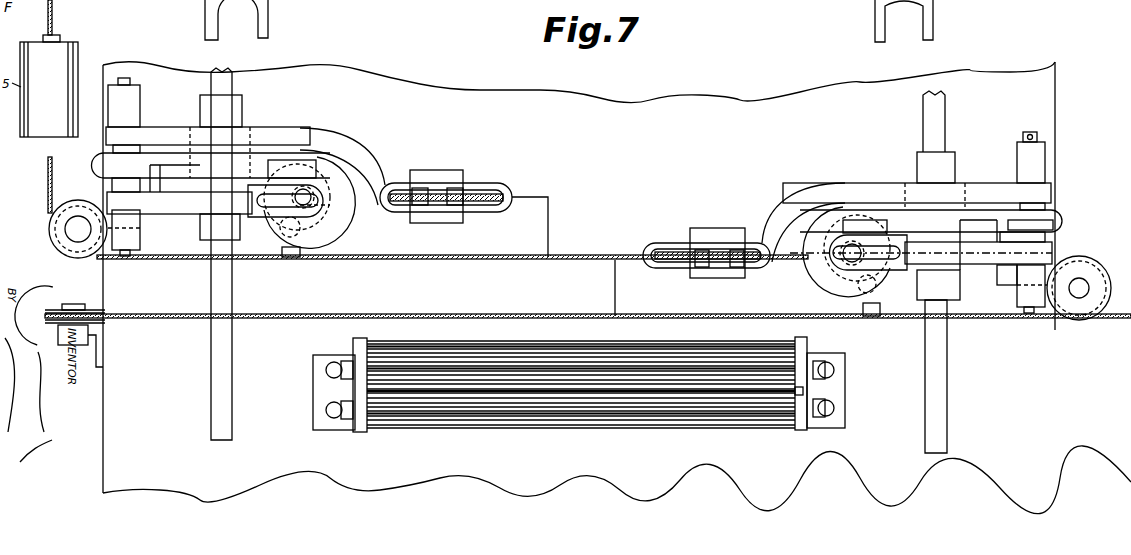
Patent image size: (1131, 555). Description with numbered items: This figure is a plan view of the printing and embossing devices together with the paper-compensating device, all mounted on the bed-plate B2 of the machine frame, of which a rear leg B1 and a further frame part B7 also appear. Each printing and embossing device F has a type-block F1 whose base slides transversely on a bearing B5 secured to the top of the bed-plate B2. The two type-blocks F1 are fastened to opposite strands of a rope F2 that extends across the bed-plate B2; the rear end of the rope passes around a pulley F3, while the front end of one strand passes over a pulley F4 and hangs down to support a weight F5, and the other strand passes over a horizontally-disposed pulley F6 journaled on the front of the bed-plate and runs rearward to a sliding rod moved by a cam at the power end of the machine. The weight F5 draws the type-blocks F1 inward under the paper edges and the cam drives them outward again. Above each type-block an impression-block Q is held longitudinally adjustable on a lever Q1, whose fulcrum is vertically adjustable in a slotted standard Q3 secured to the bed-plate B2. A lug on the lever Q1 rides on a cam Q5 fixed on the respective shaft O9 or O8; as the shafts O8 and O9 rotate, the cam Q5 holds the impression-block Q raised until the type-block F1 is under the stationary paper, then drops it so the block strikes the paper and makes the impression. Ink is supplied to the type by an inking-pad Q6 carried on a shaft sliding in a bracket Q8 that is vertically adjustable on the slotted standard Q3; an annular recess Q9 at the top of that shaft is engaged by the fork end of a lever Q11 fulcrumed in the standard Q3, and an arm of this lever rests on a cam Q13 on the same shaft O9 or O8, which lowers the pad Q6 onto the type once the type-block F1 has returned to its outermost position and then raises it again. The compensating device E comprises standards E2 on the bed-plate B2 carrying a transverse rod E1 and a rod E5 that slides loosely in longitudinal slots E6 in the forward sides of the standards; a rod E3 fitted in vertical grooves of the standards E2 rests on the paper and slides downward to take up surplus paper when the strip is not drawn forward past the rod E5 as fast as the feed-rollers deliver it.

The rear leg B1 is at (258, 27).
The bed-plate B2 is at (737, 92).
The bearing B5 is at (550, 234).
The hanger clamp B7 is at (935, 26).
The impression-block Q is at (452, 179).
The lever Q1 is at (357, 144).
The slotted standard Q3 is at (1043, 222).
The cam Q5 is at (248, 128).
The inking-pad Q6 is at (345, 199).
The bracket Q8 is at (293, 172).
The annular recess Q9 is at (304, 203).
The lever Q11 is at (183, 210).
The cam Q13 is at (195, 181).
The printing and embossing device F is at (478, 135).
The type-block F1 is at (337, 244).
The rope F2 is at (504, 313).
The pulley F3 is at (1098, 244).
The pulley F4 is at (101, 310).
The weight F5 is at (45, 294).
The pulley F6 is at (55, 237).
The compensating device E is at (353, 347).
The rod E1 is at (460, 369).
The standards E2 is at (337, 433).
The rod E3 is at (647, 383).
The rod E5 is at (618, 336).
The longitudinal slots E6 is at (808, 343).
The shaft O8 is at (947, 416).
The shaft O9 is at (212, 393).